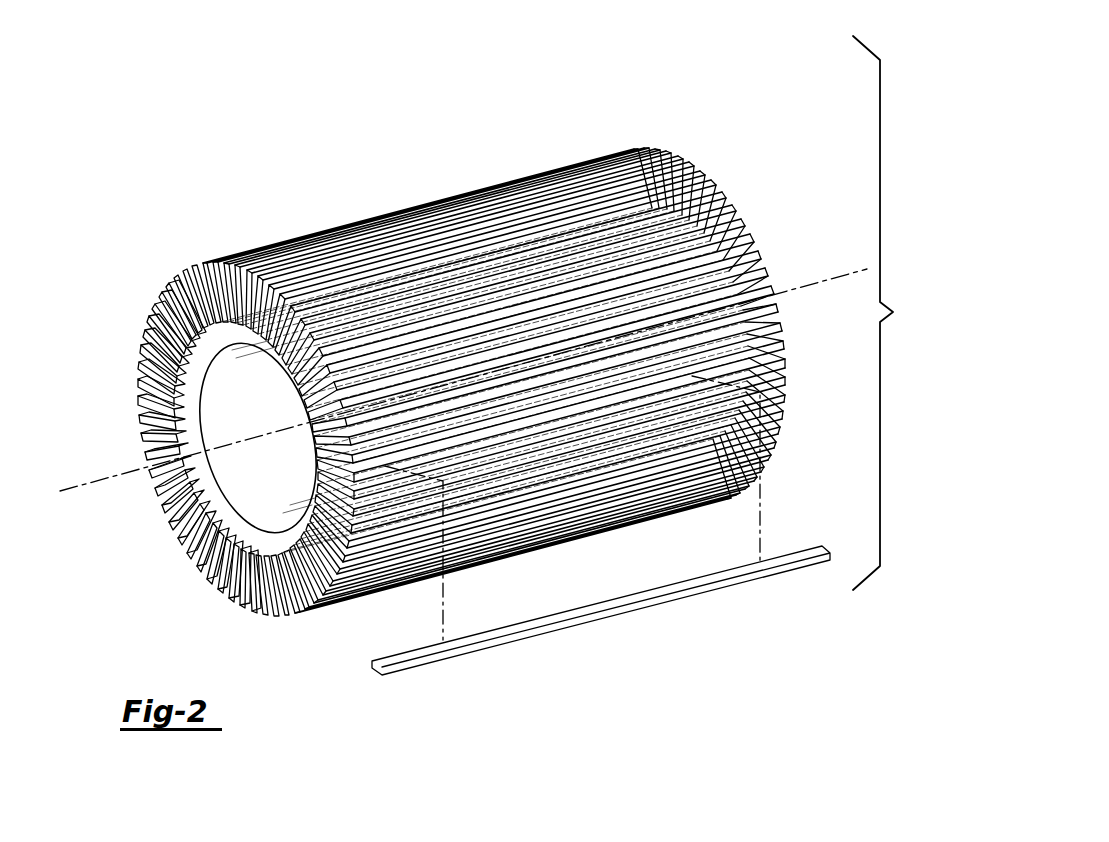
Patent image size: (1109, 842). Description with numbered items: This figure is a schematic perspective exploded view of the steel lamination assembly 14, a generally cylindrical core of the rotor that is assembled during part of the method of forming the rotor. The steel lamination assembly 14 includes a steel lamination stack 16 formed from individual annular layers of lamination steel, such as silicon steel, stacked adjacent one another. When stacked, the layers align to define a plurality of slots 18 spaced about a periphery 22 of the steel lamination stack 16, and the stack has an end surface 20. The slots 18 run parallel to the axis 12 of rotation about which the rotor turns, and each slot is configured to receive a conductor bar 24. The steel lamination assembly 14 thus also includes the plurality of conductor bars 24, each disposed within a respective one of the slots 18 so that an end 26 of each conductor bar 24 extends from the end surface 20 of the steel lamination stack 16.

The axis of rotation 12 is at (90, 505).
The steel lamination assembly 14 is at (888, 313).
The steel lamination stack 16 is at (479, 382).
The slots 18 is at (783, 355).
The end surface 20 is at (722, 201).
The periphery 22 is at (405, 201).
The conductor bar 24 is at (792, 424).
The end 26 is at (300, 362).